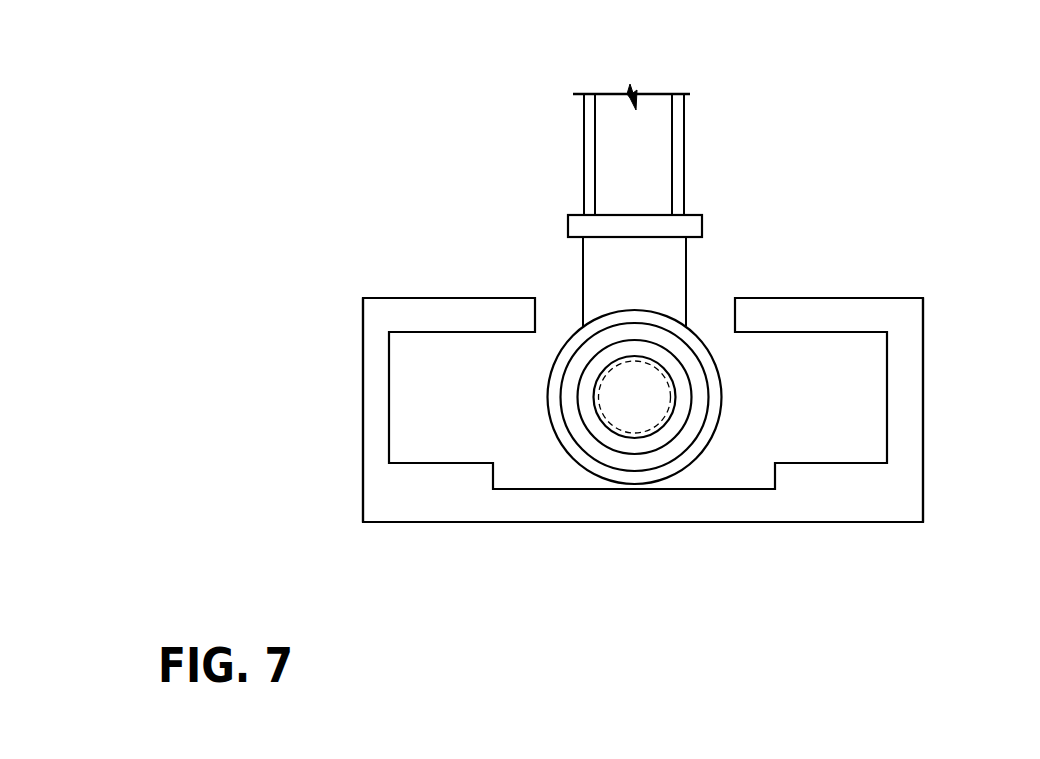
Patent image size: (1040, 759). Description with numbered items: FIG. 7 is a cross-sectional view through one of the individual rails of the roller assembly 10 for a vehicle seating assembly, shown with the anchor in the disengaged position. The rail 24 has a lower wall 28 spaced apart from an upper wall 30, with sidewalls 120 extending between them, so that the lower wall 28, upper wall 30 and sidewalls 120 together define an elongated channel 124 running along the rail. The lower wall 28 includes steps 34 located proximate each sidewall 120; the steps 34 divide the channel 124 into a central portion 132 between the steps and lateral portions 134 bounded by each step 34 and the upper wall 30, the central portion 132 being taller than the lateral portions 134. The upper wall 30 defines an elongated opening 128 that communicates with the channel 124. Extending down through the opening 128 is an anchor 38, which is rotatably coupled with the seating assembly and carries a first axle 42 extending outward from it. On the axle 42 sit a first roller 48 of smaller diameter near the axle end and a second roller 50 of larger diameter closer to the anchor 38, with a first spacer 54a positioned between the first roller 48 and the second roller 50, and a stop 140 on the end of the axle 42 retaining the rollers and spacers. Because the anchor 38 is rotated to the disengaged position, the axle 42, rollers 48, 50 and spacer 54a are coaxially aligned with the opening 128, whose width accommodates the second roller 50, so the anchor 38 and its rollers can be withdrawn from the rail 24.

The roller assembly 10 is at (868, 133).
The rail 24 is at (878, 300).
The lower wall 28 is at (571, 508).
The upper wall 30 is at (443, 312).
The step 34 is at (441, 470).
The anchor 38 is at (684, 142).
The first axle 42 is at (635, 398).
The first roller 48 is at (682, 387).
The second roller 50 is at (565, 442).
The first spacer 54a is at (664, 458).
The sidewall 120 is at (377, 427).
The channel 124 is at (505, 362).
The opening 128 is at (698, 300).
The central portion 132 is at (722, 486).
The lateral portion 134 is at (423, 408).
The stop 140 is at (628, 373).